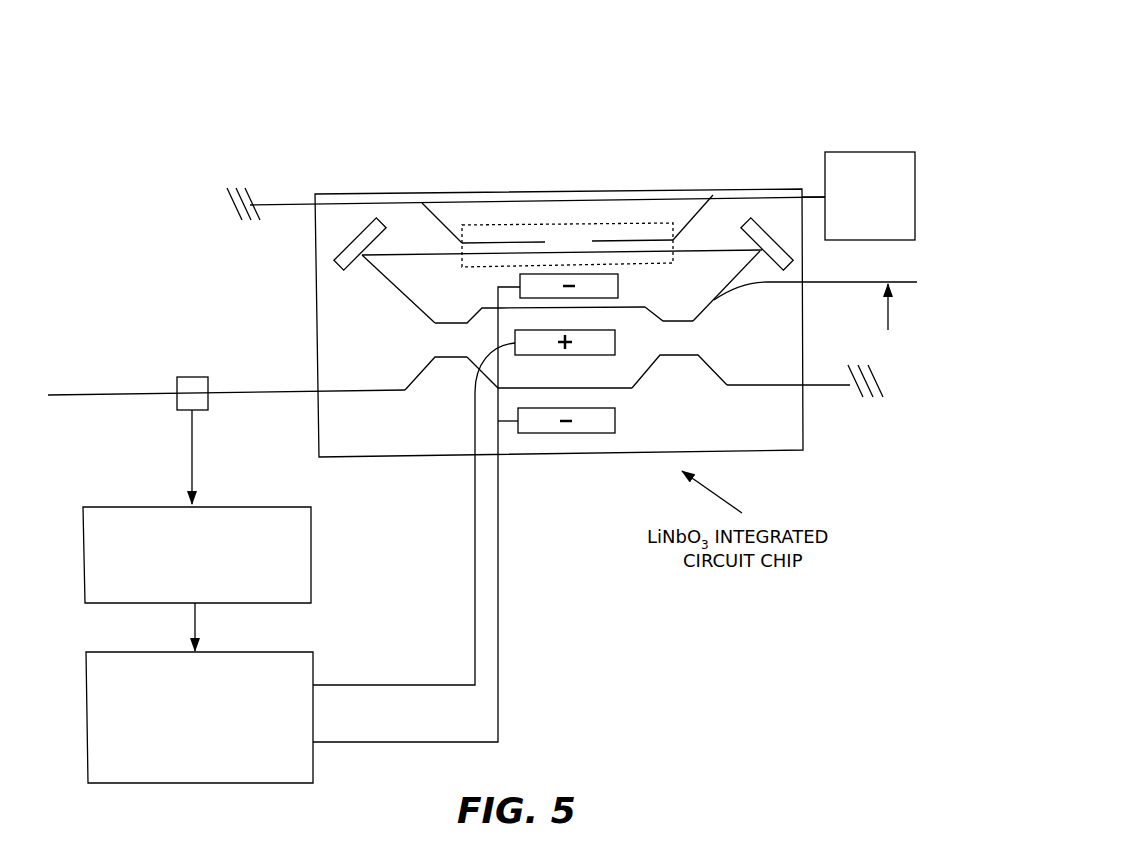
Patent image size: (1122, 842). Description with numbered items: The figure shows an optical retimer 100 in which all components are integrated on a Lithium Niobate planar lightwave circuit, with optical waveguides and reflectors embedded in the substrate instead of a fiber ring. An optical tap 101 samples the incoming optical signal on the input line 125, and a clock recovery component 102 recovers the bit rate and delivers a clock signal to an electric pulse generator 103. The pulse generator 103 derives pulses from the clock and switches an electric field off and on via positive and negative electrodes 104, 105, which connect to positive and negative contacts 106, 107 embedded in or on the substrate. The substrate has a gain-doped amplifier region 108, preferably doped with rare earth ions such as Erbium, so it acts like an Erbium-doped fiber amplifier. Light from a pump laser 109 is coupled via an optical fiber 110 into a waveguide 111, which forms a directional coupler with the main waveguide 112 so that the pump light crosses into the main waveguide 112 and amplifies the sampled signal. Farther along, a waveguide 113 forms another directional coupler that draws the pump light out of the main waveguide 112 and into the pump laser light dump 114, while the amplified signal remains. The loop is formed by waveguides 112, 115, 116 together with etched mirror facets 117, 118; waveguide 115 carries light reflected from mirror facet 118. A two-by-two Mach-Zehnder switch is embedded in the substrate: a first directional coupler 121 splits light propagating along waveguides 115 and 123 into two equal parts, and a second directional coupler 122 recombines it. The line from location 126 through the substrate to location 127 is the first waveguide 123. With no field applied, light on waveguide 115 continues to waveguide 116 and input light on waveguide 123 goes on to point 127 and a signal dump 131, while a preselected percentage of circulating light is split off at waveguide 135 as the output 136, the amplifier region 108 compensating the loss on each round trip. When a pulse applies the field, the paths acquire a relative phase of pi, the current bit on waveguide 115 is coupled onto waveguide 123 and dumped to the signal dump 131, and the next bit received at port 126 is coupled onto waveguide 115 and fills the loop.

The optical retimer 100 is at (772, 39).
The optical tap 101 is at (179, 418).
The clock recovery component 102 is at (222, 505).
The electric pulse generator 103 is at (240, 652).
The positive electrode 104 is at (473, 577).
The negative electrode 105 is at (508, 578).
The positive contact 106 is at (615, 337).
The negative contact 107 is at (618, 281).
The gain-doped amplifier region 108 is at (490, 221).
The pump laser 109 is at (888, 234).
The optical fiber 110 is at (813, 198).
The waveguide 111 is at (742, 199).
The main waveguide 112 is at (573, 238).
The waveguide 113 is at (425, 208).
The pump laser light dump 114 is at (248, 256).
The waveguide 115 is at (407, 300).
The waveguide 116 is at (708, 309).
The mirror facet 117 is at (783, 233).
The mirror facet 118 is at (335, 278).
The first directional coupler 121 is at (448, 318).
The second directional coupler 122 is at (683, 316).
The first waveguide 123 is at (392, 391).
The signal input waveguide 125 is at (290, 392).
The port 126 is at (324, 388).
The point 127 is at (799, 379).
The signal dump 131 is at (938, 454).
The waveguide 135 is at (733, 286).
The output 136 is at (965, 356).